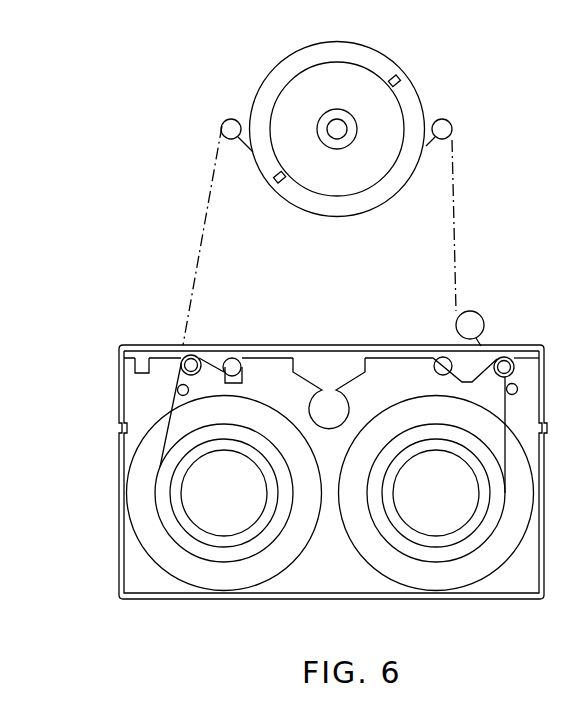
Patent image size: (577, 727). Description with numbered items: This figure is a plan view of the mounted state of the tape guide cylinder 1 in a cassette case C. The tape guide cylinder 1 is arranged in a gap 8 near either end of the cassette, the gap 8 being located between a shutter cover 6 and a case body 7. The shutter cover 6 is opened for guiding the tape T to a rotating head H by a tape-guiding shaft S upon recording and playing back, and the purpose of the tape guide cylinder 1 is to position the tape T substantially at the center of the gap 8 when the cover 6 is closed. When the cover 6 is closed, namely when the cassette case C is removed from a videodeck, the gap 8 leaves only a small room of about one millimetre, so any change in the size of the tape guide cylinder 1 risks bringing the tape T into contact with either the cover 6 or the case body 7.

The tape guide cylinder 1 is at (188, 355).
The shutter cover 6 is at (297, 349).
The case body 7 is at (267, 350).
The gap 8 is at (395, 357).
The rotating head H is at (416, 90).
The tape-guiding shaft S is at (222, 121).
The tape T is at (455, 245).
The cassette case C is at (118, 540).